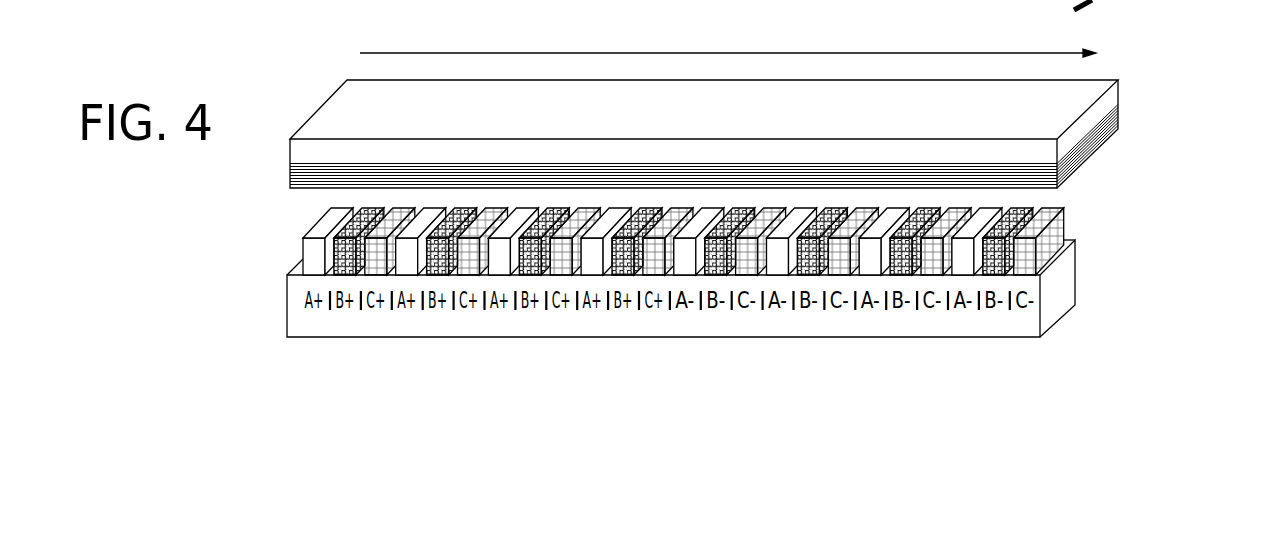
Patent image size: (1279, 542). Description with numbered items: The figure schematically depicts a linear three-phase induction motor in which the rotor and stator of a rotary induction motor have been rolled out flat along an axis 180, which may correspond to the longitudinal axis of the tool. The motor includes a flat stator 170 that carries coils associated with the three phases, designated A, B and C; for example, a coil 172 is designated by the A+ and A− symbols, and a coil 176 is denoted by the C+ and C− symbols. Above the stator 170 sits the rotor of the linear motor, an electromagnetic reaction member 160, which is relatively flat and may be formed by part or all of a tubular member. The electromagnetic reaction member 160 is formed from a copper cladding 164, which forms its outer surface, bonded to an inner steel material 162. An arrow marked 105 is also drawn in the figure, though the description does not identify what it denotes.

The light direction indicator 105 is at (806, 9).
The electromagnetic reaction member 160 is at (764, 106).
The inner steel material 162 is at (1120, 93).
The copper cladding 164 is at (739, 149).
The flat stator 170 is at (1057, 290).
The coil 172 is at (650, 302).
The coil 176 is at (480, 266).
The axis 180 is at (360, 53).